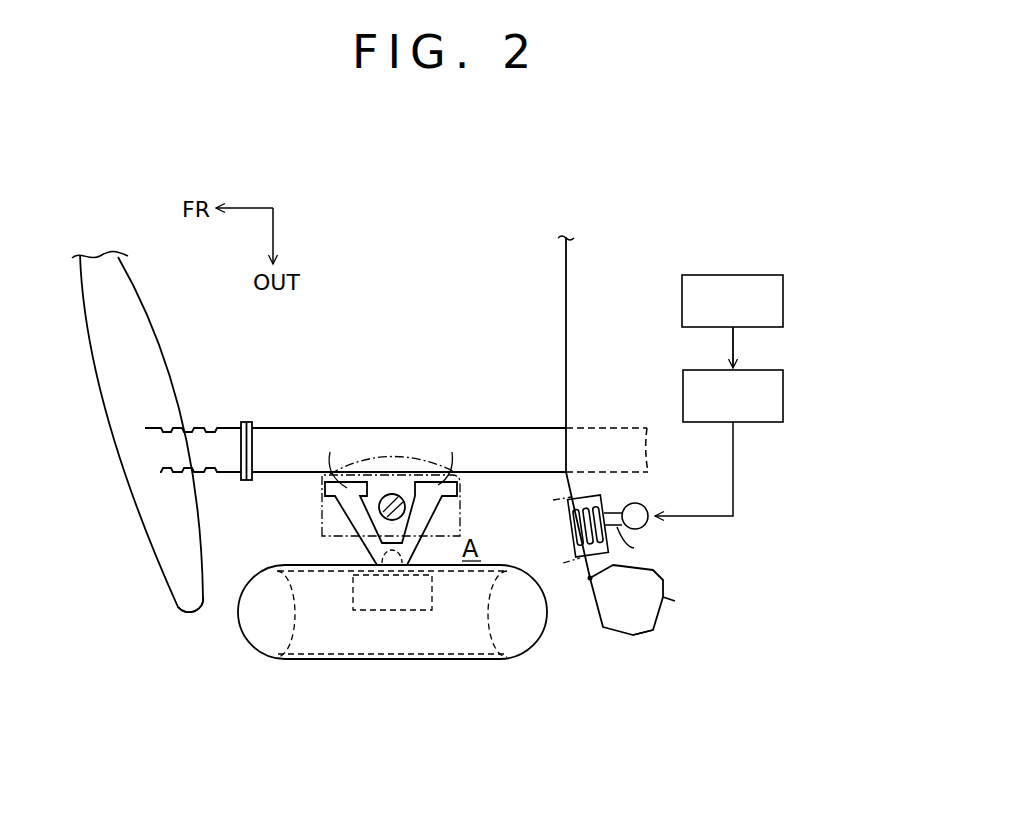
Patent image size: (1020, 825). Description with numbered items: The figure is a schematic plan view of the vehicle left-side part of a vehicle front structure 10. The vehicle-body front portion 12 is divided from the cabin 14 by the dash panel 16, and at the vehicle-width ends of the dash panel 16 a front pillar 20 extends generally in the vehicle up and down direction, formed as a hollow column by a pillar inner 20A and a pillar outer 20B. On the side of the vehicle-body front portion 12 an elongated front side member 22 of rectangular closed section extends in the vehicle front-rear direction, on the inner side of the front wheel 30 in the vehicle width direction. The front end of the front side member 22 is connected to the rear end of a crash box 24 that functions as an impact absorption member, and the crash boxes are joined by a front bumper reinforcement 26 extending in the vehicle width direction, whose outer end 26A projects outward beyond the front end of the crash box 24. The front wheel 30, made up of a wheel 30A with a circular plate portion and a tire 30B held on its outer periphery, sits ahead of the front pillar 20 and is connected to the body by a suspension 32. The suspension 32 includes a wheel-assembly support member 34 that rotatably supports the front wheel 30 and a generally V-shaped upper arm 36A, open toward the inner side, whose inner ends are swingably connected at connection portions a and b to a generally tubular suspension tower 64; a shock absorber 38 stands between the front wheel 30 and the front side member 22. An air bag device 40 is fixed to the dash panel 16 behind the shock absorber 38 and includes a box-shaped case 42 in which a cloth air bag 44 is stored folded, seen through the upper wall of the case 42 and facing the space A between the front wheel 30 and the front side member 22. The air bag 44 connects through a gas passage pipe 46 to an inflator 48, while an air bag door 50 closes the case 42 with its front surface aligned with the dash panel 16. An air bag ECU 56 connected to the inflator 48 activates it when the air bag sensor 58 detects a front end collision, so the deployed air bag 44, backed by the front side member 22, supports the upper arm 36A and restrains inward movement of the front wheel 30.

The vehicle front structure 10 is at (465, 264).
The vehicle-body front portion 12 is at (375, 256).
The cabin 14 is at (650, 262).
The dash panel 16 is at (574, 372).
The front pillar 20 is at (677, 631).
The pillar inner 20A is at (668, 582).
The pillar outer 20B is at (635, 637).
The front side member 22 is at (330, 414).
The crash box 24 is at (198, 428).
The front bumper reinforcement 26 is at (130, 325).
The outer end of front bumper reinforcement 26A is at (147, 538).
The front wheel 30 is at (392, 658).
The wheel 30A is at (412, 648).
The tire 30B is at (260, 647).
The suspension 32 is at (318, 550).
The wheel-assembly support member 34 is at (400, 612).
The upper arm 36A is at (358, 547).
The shock absorber 38 is at (409, 508).
The air bag device 40 is at (648, 509).
The case 42 is at (590, 500).
The air bag 44 is at (604, 500).
The gas passage pipe 46 is at (634, 548).
The inflator 48 is at (648, 523).
The air bag door 50 is at (570, 517).
The air bag ECU 56 is at (773, 370).
The air bag sensor 58 is at (775, 275).
The suspension tower 64 is at (318, 505).